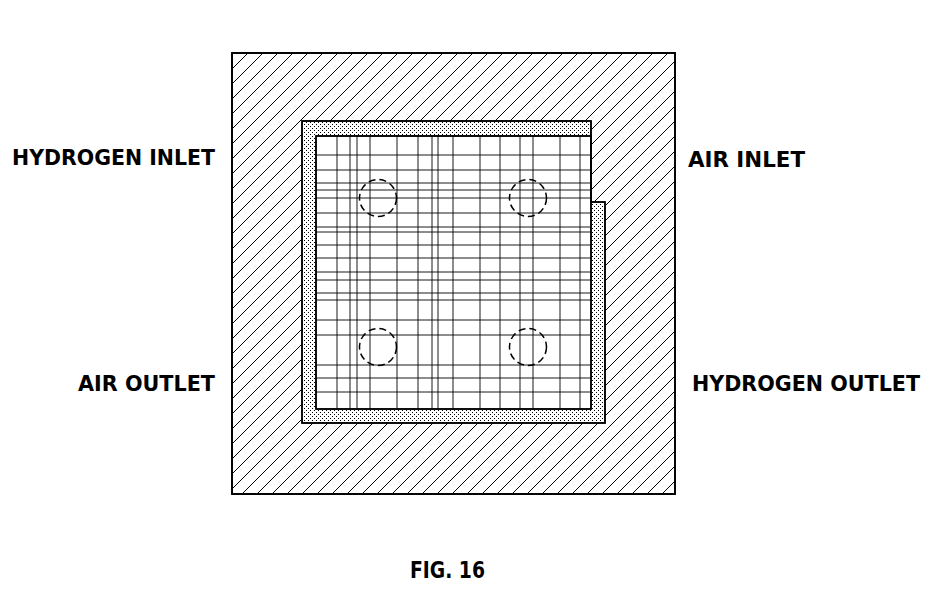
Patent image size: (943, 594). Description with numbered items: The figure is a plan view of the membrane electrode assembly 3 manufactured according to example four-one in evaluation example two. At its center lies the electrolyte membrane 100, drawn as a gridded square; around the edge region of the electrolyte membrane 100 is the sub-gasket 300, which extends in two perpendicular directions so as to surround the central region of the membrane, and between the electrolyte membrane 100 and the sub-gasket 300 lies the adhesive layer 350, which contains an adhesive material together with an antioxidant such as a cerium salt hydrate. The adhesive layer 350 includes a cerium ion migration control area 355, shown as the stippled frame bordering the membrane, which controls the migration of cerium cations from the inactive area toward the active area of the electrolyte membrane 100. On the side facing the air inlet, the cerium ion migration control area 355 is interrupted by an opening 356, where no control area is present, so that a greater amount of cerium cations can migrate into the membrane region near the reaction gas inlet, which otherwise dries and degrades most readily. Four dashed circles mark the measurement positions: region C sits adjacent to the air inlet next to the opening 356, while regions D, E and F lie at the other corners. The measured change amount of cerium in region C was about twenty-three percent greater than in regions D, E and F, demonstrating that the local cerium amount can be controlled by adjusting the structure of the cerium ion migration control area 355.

The membrane electrode assembly 3 is at (187, 36).
The electrolyte membrane 100 is at (572, 393).
The sub-gasket 300 is at (645, 267).
The adhesive layer 350 is at (453, 273).
The cerium ion migration control area 355 is at (598, 316).
The opening 356 is at (598, 163).
The region D is at (379, 180).
The region C is at (532, 180).
The region E is at (377, 365).
The region F is at (530, 365).